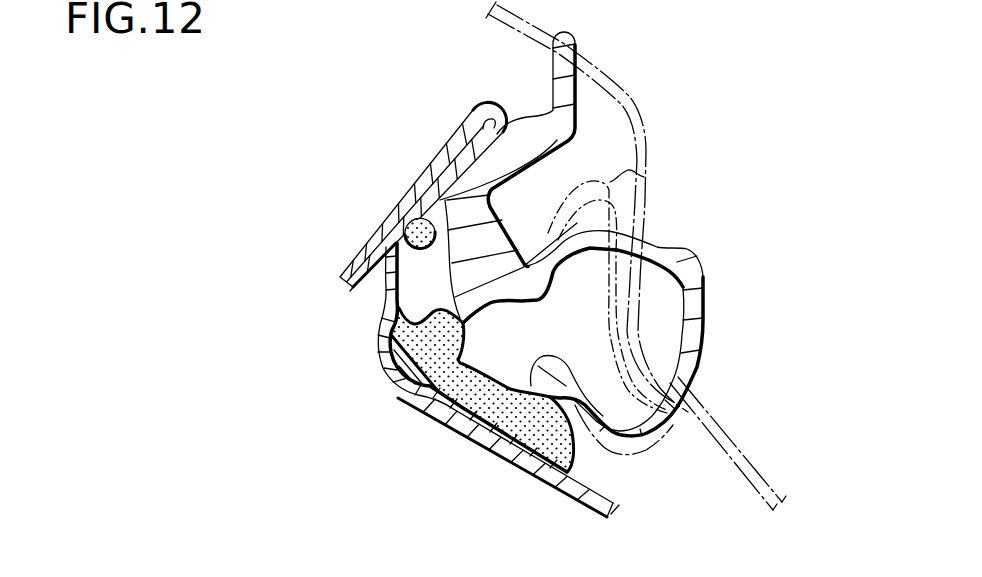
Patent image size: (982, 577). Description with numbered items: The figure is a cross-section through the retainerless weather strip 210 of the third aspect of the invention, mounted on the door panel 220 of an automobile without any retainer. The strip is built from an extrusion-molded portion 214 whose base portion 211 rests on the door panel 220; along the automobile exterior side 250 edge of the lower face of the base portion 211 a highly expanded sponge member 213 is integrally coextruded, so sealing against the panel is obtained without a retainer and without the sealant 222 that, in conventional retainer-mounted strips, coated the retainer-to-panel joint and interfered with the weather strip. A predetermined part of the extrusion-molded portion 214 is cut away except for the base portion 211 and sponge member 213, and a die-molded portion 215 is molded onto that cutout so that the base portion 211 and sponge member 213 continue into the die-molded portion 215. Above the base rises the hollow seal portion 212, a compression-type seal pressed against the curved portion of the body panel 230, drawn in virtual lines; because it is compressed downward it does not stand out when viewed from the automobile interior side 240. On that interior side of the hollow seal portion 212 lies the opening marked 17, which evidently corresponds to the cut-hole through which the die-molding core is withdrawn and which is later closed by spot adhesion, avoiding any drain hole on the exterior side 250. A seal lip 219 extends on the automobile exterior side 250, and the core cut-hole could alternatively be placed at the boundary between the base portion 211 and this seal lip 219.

The lip 17 is at (530, 390).
The weather strip 210 is at (718, 292).
The base portion 211 is at (520, 430).
The hollow seal portion 212 is at (633, 199).
The highly expanded sponge member 213 is at (403, 387).
The extrusion-molded portion 214 is at (508, 462).
The die-molded portion 215 is at (612, 243).
The seal lip 219 is at (557, 88).
The door panel 220 is at (386, 303).
The sealant 222 is at (408, 222).
The body panel 230 is at (640, 110).
The automobile interior side 240 is at (860, 421).
The automobile exterior side 250 is at (265, 421).